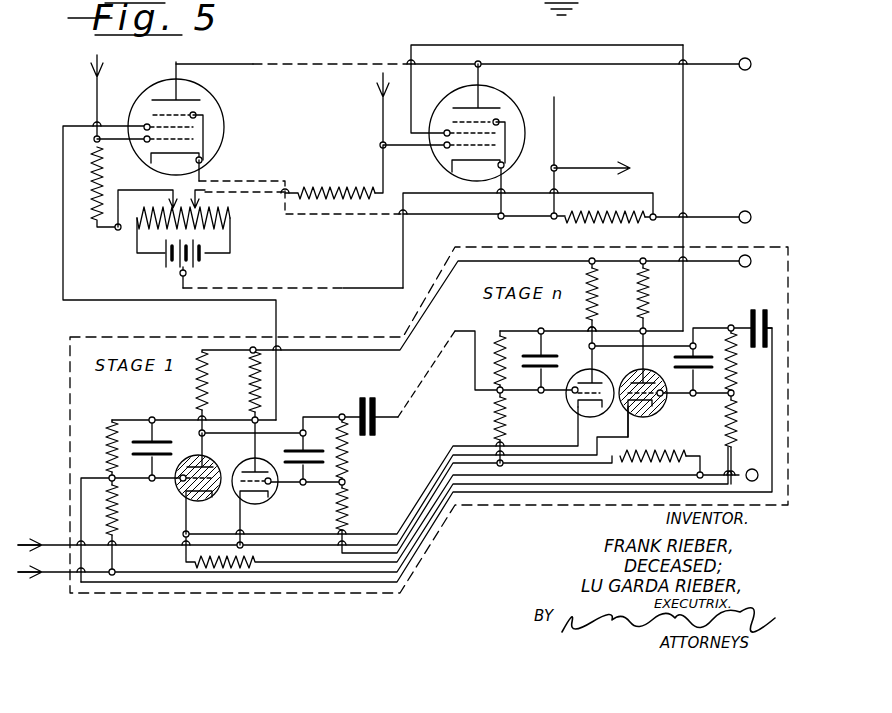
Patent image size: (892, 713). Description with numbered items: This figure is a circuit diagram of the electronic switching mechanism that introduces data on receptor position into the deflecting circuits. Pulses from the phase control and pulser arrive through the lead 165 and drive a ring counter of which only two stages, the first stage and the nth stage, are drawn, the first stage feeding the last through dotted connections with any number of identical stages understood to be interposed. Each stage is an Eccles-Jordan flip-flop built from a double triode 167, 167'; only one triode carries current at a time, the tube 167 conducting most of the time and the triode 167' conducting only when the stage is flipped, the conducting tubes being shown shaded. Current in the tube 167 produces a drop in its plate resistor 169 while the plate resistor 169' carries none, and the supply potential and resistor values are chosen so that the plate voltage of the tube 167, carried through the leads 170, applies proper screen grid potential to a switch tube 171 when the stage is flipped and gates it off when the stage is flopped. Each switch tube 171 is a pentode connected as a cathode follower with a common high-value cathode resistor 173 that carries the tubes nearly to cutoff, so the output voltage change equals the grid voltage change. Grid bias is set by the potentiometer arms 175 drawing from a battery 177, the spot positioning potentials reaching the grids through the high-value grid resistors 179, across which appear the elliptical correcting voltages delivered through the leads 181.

The lead 165 is at (44, 533).
The triode of double triode 167 is at (466, 454).
The triode of double triode 167' is at (375, 451).
The plate resistor 169 is at (429, 340).
The plate resistor 169' is at (371, 339).
The leads 170 is at (63, 170).
The switch tube 171 is at (207, 162).
The cathode resistor 173 is at (566, 224).
The potentiometer arms 175 is at (198, 202).
The battery 177 is at (200, 271).
The grid resistors 179 is at (328, 174).
The leads 181 is at (95, 105).